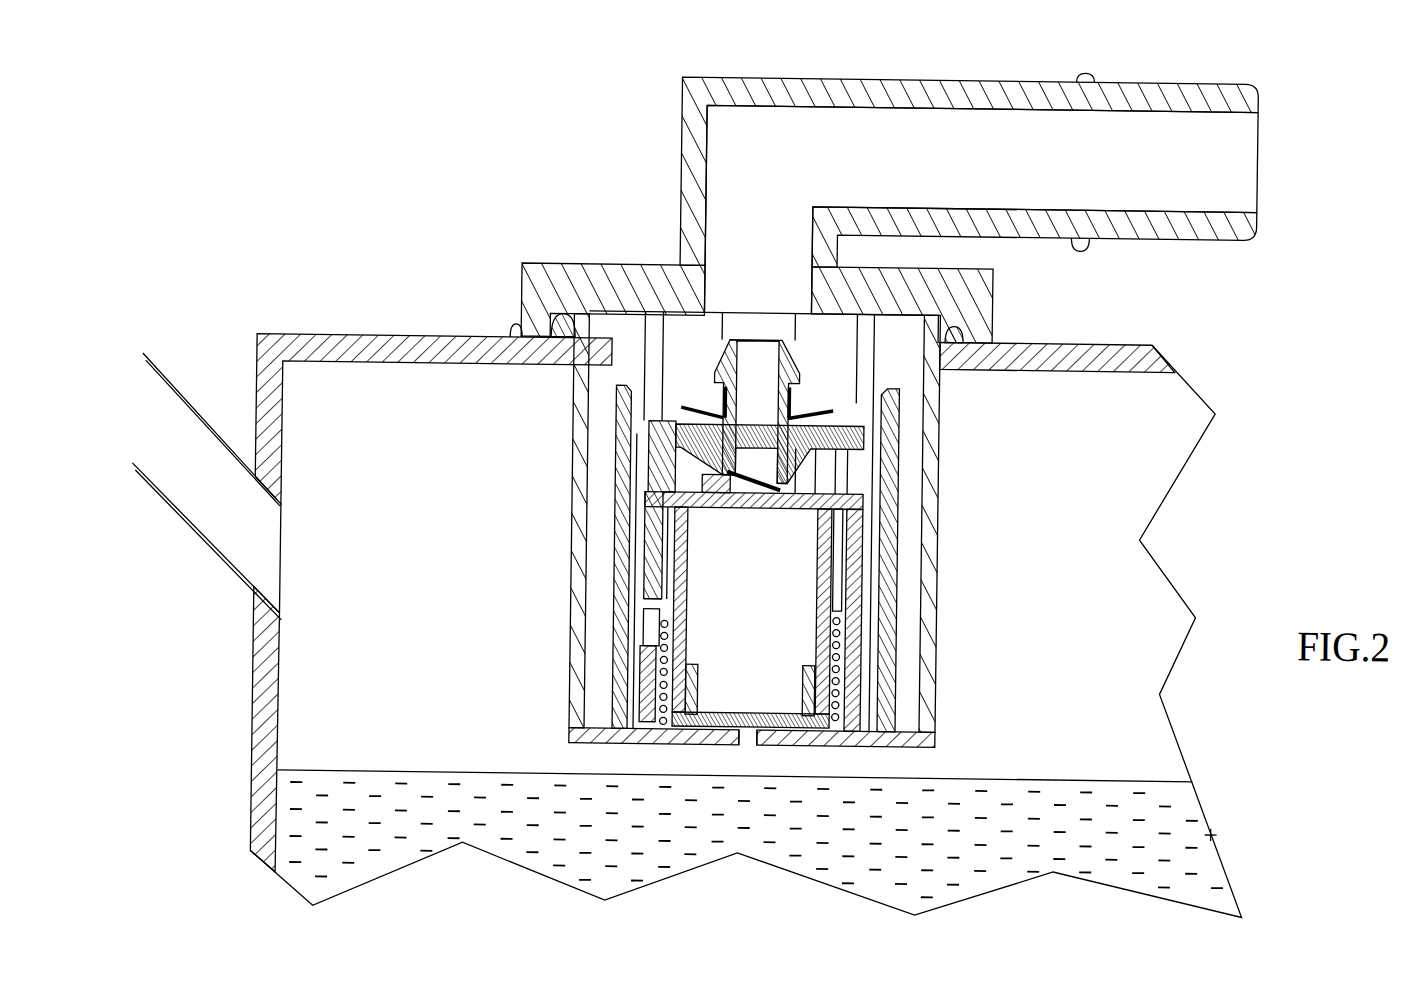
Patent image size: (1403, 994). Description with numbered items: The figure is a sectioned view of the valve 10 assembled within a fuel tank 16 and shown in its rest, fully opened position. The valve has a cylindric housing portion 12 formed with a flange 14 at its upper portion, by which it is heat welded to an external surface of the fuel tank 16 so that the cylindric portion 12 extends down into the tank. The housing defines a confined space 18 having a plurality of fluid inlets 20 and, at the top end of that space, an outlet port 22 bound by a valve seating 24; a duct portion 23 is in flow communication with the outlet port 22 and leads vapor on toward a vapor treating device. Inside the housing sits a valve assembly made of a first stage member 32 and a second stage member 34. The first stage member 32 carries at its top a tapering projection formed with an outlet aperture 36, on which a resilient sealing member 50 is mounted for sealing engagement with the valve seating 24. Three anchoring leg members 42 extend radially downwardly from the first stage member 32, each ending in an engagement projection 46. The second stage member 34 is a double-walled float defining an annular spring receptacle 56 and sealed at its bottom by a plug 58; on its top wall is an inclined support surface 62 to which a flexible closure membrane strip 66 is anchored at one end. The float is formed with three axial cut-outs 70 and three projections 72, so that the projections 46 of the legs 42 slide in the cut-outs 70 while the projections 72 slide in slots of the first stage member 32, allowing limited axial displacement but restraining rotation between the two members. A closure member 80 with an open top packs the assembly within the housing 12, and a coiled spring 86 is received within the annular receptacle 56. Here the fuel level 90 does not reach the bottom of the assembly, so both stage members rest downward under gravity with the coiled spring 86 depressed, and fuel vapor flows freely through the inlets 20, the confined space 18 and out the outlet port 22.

The valve 10 is at (1136, 460).
The cylindric housing portion 12 is at (933, 514).
The flange 14 is at (990, 304).
The fuel tank 16 is at (1155, 341).
The confined space 18 is at (599, 433).
The fluid inlets 20 is at (580, 700).
The outlet port 22 is at (734, 280).
The duct portion 23 is at (1213, 144).
The valve seating 24 is at (747, 347).
The first stage member 32 is at (864, 442).
The second stage member 34 is at (552, 320).
The outlet aperture 36 is at (608, 268).
The anchoring leg members 42 is at (675, 556).
The engagement projection 46 is at (646, 583).
The resilient sealing member 50 is at (790, 408).
The annular spring receptacle 56 is at (863, 642).
The plug 58 is at (700, 690).
The inclined support surface 62 is at (648, 503).
The flexible closure membrane strip 66 is at (648, 474).
The axial cut-outs 70 is at (660, 533).
The projections 72 is at (511, 334).
The closure member 80 is at (890, 714).
The coiled spring 86 is at (645, 671).
The fuel level 90 is at (1215, 829).